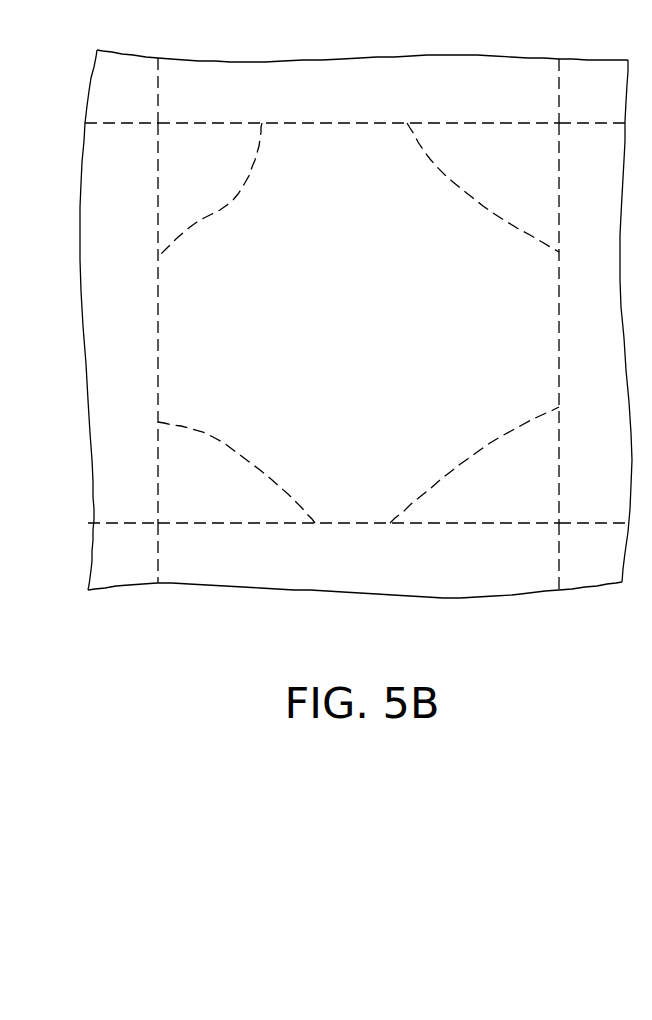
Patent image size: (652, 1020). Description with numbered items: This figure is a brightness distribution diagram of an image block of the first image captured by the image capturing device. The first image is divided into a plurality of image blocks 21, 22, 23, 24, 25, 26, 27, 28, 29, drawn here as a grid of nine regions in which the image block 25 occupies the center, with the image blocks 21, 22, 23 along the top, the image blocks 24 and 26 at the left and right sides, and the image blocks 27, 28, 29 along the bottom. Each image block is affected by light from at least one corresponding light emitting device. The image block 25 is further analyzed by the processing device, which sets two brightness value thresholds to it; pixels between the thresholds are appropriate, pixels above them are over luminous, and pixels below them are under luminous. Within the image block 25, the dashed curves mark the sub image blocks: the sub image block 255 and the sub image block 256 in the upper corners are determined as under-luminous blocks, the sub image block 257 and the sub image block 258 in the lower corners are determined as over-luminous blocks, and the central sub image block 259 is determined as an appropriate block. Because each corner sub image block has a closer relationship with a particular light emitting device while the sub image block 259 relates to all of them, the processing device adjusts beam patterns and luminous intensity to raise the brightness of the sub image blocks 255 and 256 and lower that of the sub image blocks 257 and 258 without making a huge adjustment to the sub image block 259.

The image block 25 is at (314, 147).
The image block 21 is at (106, 100).
The image block 22 is at (343, 100).
The image block 23 is at (576, 100).
The image block 24 is at (106, 334).
The image block 26 is at (576, 334).
The image block 27 is at (106, 568).
The image block 28 is at (343, 568).
The image block 29 is at (576, 568).
The sub image block 255 is at (176, 172).
The sub image block 256 is at (485, 172).
The sub image block 257 is at (186, 502).
The sub image block 258 is at (487, 500).
The sub image block 259 is at (336, 338).